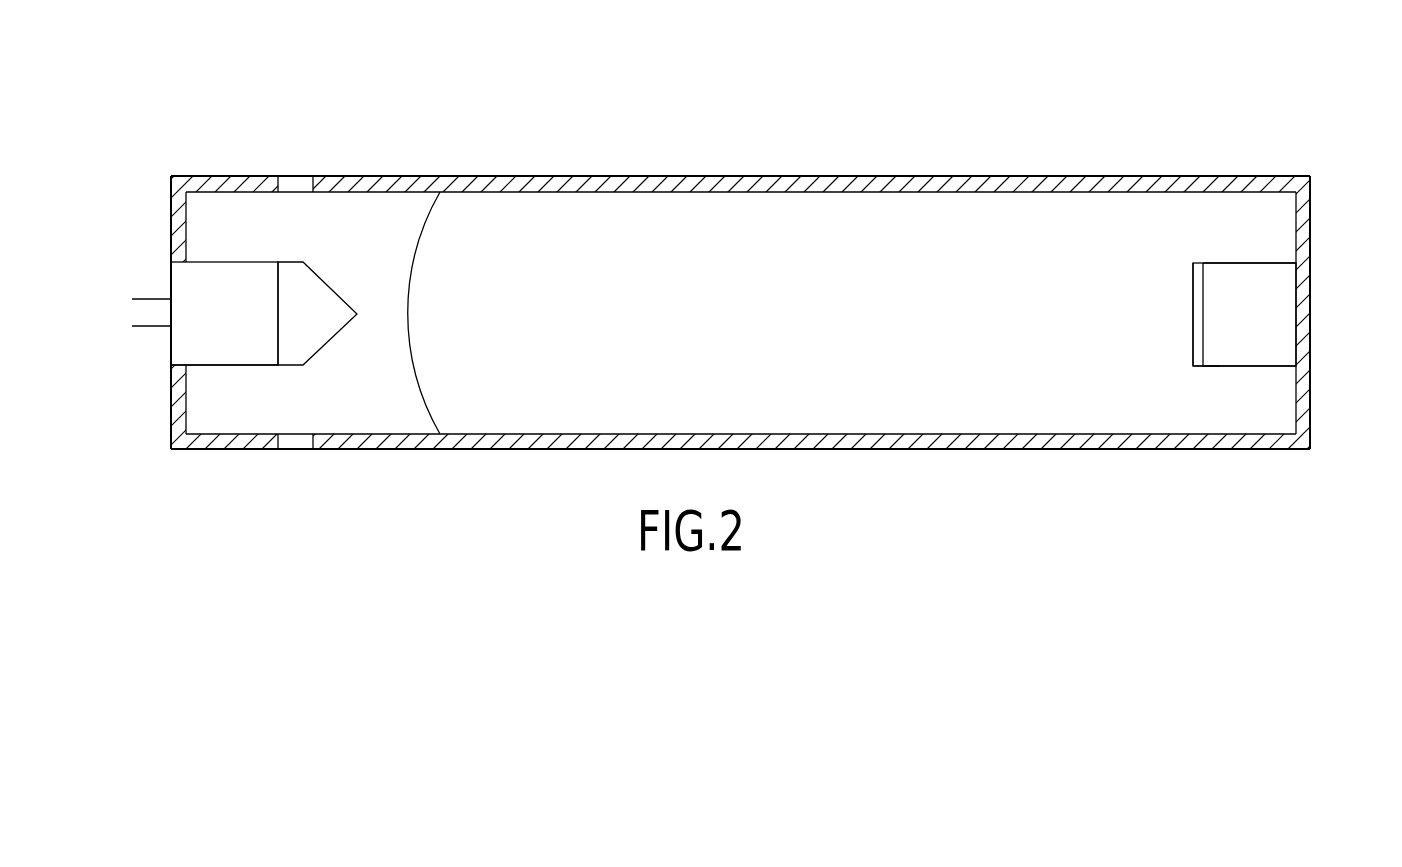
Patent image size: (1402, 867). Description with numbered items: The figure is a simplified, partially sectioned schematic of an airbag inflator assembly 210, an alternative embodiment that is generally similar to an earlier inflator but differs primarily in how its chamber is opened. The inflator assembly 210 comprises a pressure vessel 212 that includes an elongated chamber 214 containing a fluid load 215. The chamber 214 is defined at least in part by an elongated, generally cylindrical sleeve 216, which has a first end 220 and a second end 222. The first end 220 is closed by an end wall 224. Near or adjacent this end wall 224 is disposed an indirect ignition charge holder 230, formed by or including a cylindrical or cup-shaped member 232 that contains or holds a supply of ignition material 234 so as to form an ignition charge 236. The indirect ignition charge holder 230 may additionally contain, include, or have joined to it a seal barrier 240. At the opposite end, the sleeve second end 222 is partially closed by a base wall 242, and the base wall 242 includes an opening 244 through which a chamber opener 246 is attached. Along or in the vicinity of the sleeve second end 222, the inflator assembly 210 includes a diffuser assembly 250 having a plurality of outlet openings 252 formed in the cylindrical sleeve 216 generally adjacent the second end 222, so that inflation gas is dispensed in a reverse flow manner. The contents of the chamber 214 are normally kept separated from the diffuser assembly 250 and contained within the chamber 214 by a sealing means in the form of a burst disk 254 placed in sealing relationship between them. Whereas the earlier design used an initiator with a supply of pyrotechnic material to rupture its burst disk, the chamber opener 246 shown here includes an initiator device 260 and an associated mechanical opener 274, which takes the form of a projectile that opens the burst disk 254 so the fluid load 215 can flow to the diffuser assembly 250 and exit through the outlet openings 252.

The inflator assembly 210 is at (701, 273).
The pressure vessel 212 is at (640, 177).
The elongated chamber 214 is at (835, 408).
The fluid load 215 is at (973, 398).
The cylindrical sleeve 216 is at (927, 180).
The first end 220 is at (1297, 144).
The second end 222 is at (165, 146).
The end wall 224 is at (1312, 393).
The indirect ignition charge holder 230 is at (1250, 267).
The cup-shaped member 232 is at (1218, 367).
The ignition material 234 is at (1265, 295).
The ignition charge 236 is at (1273, 333).
The seal barrier 240 is at (1190, 313).
The base wall 242 is at (180, 222).
The opening 244 is at (170, 378).
The chamber opener 246 is at (265, 376).
The diffuser assembly 250 is at (417, 256).
The outlet openings 252 is at (295, 178).
The burst disk 254 is at (409, 309).
The initiator device 260 is at (260, 391).
The mechanical opener 274 is at (308, 318).